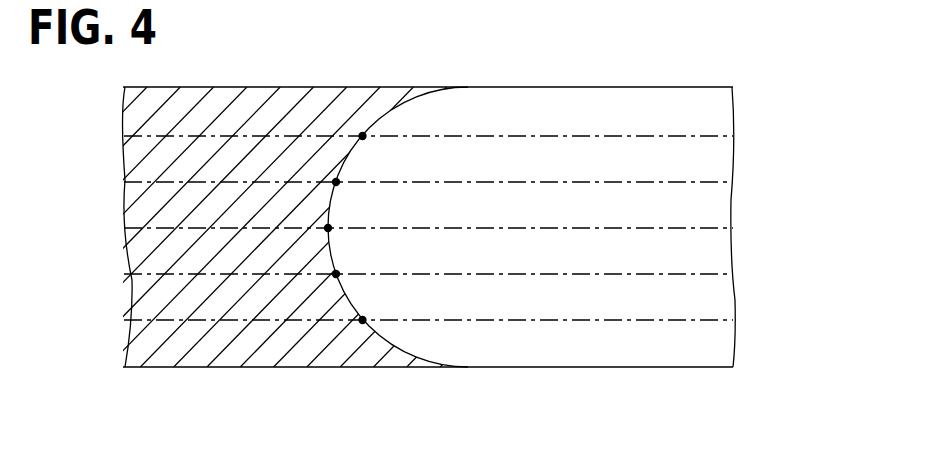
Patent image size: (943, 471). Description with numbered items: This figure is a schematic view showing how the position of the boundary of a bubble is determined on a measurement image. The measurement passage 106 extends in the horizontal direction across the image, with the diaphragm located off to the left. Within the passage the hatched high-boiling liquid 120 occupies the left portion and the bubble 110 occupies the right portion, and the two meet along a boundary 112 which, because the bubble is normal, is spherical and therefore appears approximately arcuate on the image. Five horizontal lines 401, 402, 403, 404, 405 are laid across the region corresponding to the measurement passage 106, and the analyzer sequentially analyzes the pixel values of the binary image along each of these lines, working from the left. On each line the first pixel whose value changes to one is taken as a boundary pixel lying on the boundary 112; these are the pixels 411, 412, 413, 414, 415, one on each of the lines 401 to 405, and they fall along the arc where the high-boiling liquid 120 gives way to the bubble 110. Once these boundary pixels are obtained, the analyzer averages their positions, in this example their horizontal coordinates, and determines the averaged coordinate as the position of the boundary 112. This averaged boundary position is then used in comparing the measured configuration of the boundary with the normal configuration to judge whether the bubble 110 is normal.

The measurement passage 106 is at (353, 362).
The bubble 110 is at (560, 352).
The boundary 112 is at (386, 114).
The high-boiling liquid 120 is at (213, 340).
The line 401 is at (712, 136).
The line 402 is at (712, 182).
The line 403 is at (708, 228).
The line 404 is at (702, 274).
The line 405 is at (705, 320).
The boundary pixel 411 is at (363, 136).
The boundary pixel 412 is at (337, 182).
The boundary pixel 413 is at (328, 228).
The boundary pixel 414 is at (336, 274).
The boundary pixel 415 is at (362, 320).